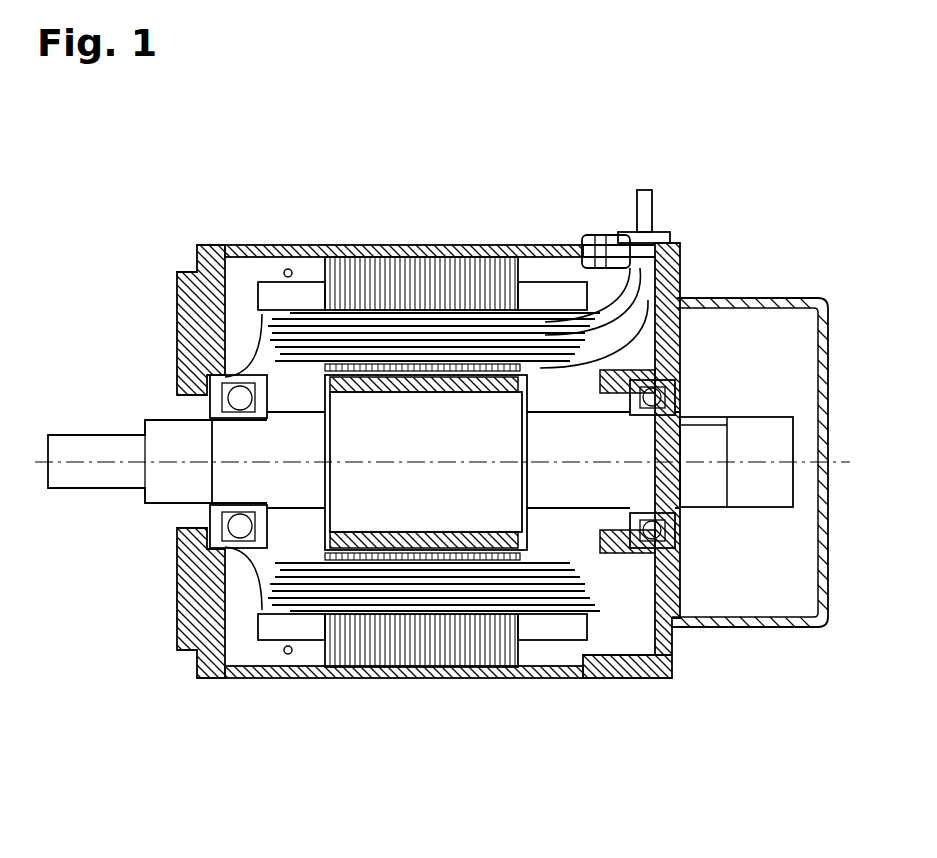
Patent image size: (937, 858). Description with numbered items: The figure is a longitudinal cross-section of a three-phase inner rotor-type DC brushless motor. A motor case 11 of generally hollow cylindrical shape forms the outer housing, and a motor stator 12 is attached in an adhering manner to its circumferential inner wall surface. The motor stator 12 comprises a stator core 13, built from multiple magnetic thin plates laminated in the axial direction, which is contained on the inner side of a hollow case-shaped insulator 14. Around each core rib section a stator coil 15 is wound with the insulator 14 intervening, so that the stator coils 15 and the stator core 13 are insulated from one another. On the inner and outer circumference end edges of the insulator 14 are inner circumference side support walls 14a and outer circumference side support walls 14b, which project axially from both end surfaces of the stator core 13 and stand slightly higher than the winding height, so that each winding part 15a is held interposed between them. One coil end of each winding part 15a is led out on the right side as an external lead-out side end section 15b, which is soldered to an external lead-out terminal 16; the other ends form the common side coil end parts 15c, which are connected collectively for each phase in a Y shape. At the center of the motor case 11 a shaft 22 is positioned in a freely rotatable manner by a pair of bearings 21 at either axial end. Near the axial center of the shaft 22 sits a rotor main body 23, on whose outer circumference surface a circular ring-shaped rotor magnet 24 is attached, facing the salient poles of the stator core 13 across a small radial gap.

The motor case 11 is at (540, 678).
The motor stator 12 is at (610, 598).
The stator core 13 is at (430, 270).
The insulator 14 is at (246, 292).
The inner circumference side support wall 14a is at (665, 302).
The outer circumference side support wall 14b is at (555, 290).
The stator coil 15 is at (430, 347).
The winding part 15a is at (265, 325).
The external lead-out side end section 15b is at (594, 302).
The common side coil end part 15c is at (289, 269).
The external lead-out terminal 16 is at (655, 208).
The bearing 21 is at (178, 578).
The shaft 22 is at (760, 442).
The rotor main body 23 is at (442, 478).
The rotor magnet 24 is at (425, 532).